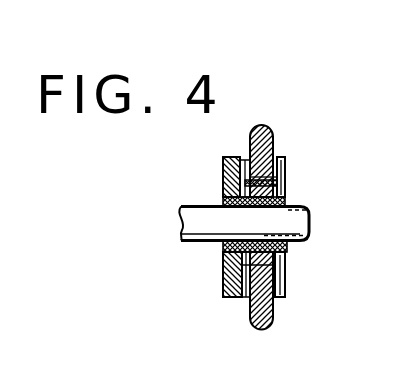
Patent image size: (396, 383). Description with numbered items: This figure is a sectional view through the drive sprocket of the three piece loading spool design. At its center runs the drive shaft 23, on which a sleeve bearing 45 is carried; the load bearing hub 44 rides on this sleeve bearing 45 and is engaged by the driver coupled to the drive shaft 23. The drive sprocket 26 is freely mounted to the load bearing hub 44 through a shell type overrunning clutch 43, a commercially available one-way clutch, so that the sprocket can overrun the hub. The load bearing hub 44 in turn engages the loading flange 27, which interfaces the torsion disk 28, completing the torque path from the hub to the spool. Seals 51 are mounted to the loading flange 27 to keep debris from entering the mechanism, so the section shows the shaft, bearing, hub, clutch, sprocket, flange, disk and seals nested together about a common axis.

The drive shaft 23 is at (310, 226).
The drive sprocket 26 is at (249, 322).
The loading flange 27 is at (231, 158).
The torsion disk 28 is at (223, 265).
The shell type overrunning clutch 43 is at (287, 265).
The load bearing hub 44 is at (291, 197).
The sleeve bearing 45 is at (249, 205).
The seals 51 is at (272, 147).